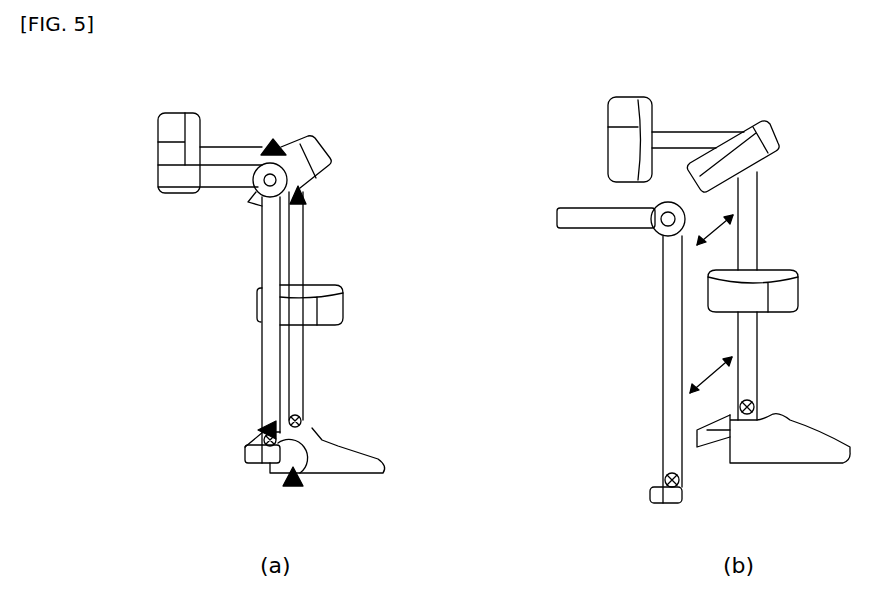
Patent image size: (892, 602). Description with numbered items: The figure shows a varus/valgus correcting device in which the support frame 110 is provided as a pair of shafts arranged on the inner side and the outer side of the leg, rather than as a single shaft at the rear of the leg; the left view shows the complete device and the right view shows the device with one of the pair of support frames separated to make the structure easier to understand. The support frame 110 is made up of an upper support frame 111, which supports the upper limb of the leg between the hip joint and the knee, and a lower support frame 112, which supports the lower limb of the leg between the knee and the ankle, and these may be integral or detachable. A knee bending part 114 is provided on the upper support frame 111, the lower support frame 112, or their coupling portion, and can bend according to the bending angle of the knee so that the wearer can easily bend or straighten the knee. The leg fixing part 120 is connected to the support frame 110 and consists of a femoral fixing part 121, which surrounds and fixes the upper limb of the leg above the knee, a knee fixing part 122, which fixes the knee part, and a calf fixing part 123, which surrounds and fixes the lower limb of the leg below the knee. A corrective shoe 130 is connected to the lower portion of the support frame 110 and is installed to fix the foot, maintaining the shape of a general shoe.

The support frame 110 is at (96, 353).
The upper support frame 111 is at (218, 178).
The lower support frame 112 is at (262, 182).
The knee bending part 114 is at (268, 358).
The leg fixing part 120 is at (437, 70).
The femoral fixing part 121 is at (172, 127).
The knee fixing part 122 is at (302, 160).
The calf fixing part 123 is at (346, 295).
The corrective shoe 130 is at (343, 463).